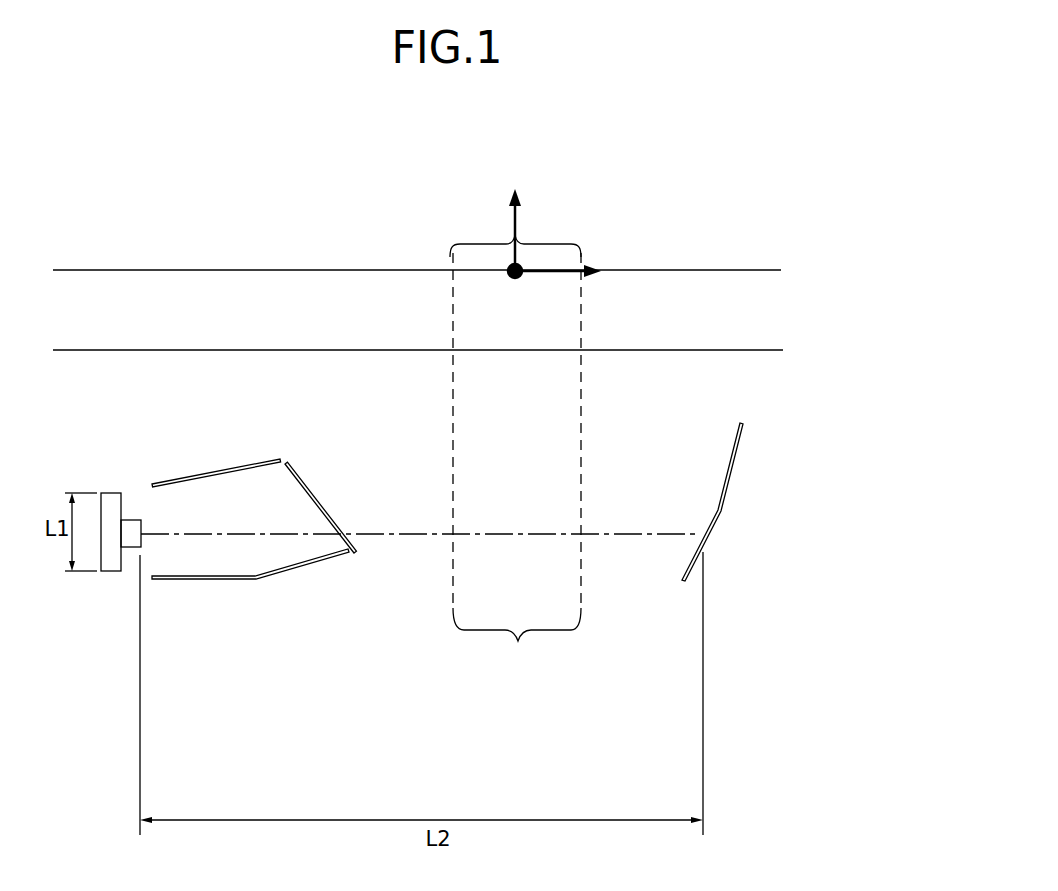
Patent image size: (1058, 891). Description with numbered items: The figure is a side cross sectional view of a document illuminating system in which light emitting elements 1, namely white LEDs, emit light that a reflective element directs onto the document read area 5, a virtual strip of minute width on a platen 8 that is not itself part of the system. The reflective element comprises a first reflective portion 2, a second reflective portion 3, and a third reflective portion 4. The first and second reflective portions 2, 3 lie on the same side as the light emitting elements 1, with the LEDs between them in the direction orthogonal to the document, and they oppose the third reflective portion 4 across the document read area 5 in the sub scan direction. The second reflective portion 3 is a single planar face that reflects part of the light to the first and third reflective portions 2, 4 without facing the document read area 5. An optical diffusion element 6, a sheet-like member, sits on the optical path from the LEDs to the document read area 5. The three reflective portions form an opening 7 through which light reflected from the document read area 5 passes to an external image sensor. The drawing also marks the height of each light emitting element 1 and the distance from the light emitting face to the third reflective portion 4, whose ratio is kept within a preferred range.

The light emitting element 1 is at (130, 530).
The first reflective portion 2 is at (212, 580).
The second reflective portion 3 is at (190, 479).
The third reflective portion 4 is at (703, 545).
The document read area 5 is at (544, 232).
The optical diffusion element 6 is at (333, 518).
The opening 7 is at (518, 641).
The platen 8 is at (700, 330).